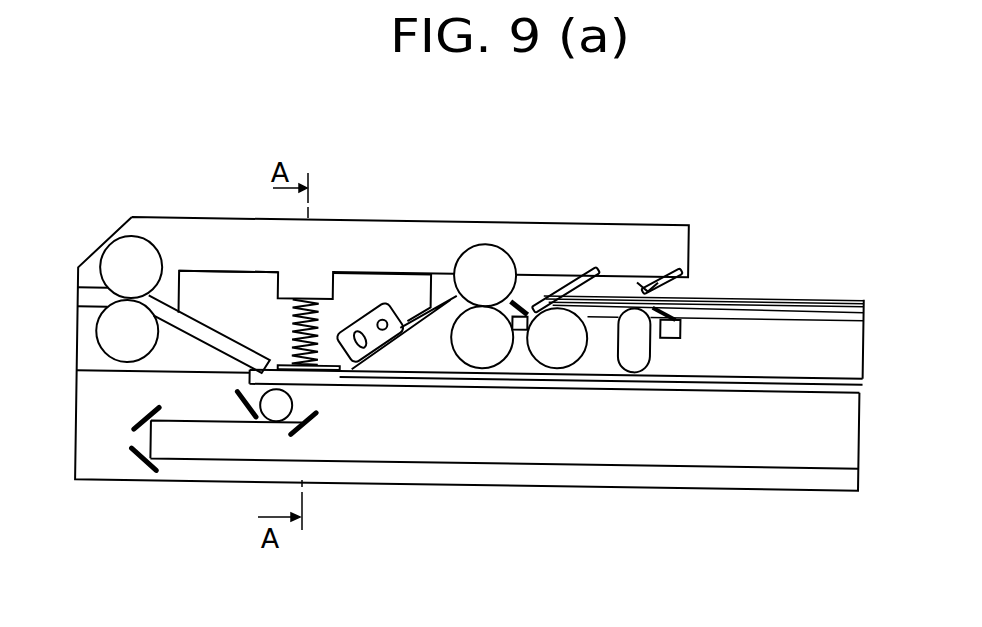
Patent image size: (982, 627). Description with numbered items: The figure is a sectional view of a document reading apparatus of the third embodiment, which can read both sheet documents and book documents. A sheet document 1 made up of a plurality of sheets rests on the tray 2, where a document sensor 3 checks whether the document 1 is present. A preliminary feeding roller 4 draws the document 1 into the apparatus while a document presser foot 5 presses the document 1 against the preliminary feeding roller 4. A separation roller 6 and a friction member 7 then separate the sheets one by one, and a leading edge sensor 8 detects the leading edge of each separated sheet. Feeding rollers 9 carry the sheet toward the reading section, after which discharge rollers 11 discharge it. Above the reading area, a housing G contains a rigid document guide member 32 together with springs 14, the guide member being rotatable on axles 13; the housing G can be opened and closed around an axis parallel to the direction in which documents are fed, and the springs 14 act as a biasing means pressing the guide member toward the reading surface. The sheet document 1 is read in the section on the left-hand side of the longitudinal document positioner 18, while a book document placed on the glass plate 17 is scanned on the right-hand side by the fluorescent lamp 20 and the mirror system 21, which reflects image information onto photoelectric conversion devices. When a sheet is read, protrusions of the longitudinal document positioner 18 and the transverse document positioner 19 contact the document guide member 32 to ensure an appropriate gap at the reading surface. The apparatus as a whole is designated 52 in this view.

The document 1 is at (807, 298).
The tray 2 is at (752, 318).
The document sensor 3 is at (675, 325).
The preliminary feeding roller 4 is at (655, 378).
The document presser foot 5 is at (656, 283).
The separation roller 6 is at (568, 372).
The friction member 7 is at (590, 268).
The leading edge sensor 8 is at (531, 273).
The feeding rollers 9 is at (478, 368).
The discharge rollers 11 is at (151, 314).
The axles 13 is at (373, 367).
The springs 14 is at (318, 298).
The glass plate 17 is at (770, 390).
The longitudinal document positioner 18 is at (358, 370).
The transverse document positioner 19 is at (517, 375).
The fluorescent lamp 20 is at (277, 414).
The mirror system 21 is at (297, 430).
The rigid document guide member 32 is at (340, 353).
The sheet feeding device 52 is at (501, 196).
The housing G is at (223, 262).